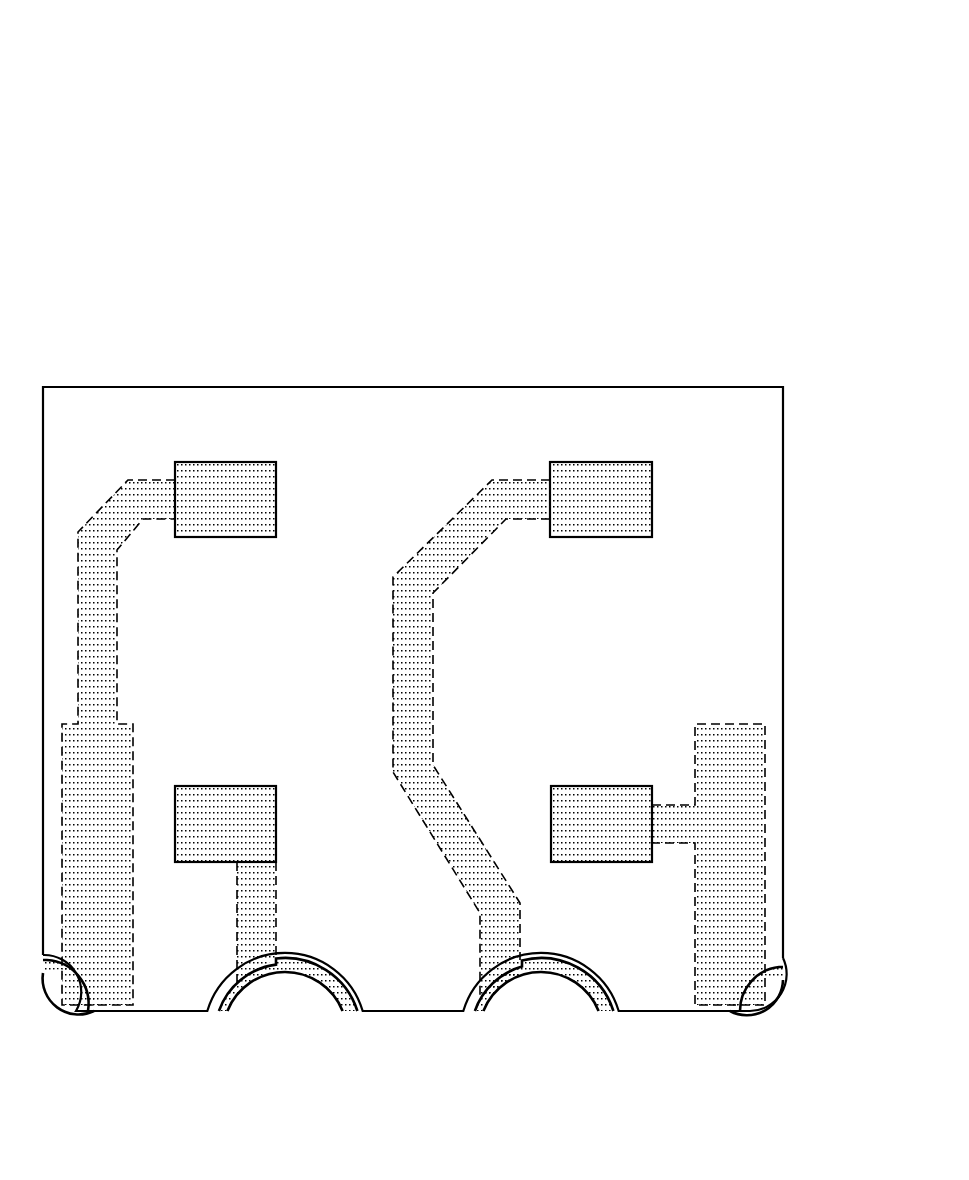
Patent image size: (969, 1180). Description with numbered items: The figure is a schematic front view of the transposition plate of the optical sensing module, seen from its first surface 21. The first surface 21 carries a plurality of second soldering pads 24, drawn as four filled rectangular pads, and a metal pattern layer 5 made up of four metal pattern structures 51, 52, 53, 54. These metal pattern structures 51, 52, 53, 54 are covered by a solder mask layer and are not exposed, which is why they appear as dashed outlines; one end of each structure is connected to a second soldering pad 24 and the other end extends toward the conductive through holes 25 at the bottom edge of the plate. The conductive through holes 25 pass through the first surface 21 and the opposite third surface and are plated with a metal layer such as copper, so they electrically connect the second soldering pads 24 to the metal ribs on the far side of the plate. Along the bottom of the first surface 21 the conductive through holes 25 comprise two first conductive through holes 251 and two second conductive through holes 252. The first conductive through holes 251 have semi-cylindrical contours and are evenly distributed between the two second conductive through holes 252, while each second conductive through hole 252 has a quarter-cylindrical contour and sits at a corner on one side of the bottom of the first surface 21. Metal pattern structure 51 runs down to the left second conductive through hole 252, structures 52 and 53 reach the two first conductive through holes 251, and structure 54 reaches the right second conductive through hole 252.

The first surface 21 is at (416, 413).
The second soldering pad 24 is at (262, 496).
The metal pattern layer 5 is at (842, 113).
The metal pattern structure 51 is at (108, 631).
The metal pattern structure 52 is at (262, 905).
The metal pattern structure 53 is at (455, 817).
The metal pattern structure 54 is at (748, 872).
The conductive through hole 25 is at (842, 10).
The first conductive through hole 251 is at (292, 1012).
The second conductive through hole 252 is at (54, 1016).